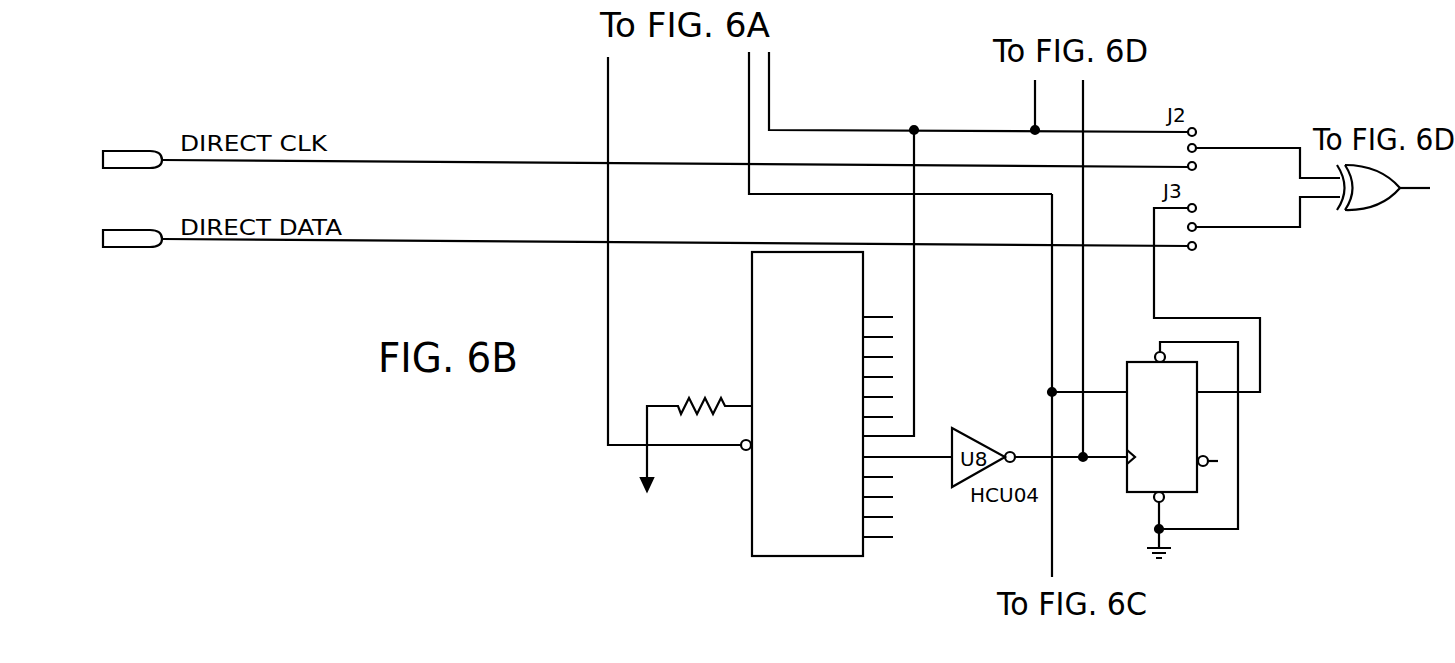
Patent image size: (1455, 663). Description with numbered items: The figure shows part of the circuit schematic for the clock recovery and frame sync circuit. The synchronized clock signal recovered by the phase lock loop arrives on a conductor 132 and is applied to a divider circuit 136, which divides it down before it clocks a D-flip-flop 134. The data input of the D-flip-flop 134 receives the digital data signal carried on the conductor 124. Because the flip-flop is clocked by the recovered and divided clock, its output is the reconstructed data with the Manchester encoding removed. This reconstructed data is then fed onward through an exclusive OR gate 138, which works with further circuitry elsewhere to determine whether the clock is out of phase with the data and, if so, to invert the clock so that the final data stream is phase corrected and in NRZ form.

The conductor 124 is at (1052, 315).
The conductor 132 is at (608, 275).
The D-flip-flop 134 is at (1140, 492).
The divider circuit 136 is at (800, 556).
The exclusive OR gate 138 is at (1393, 200).